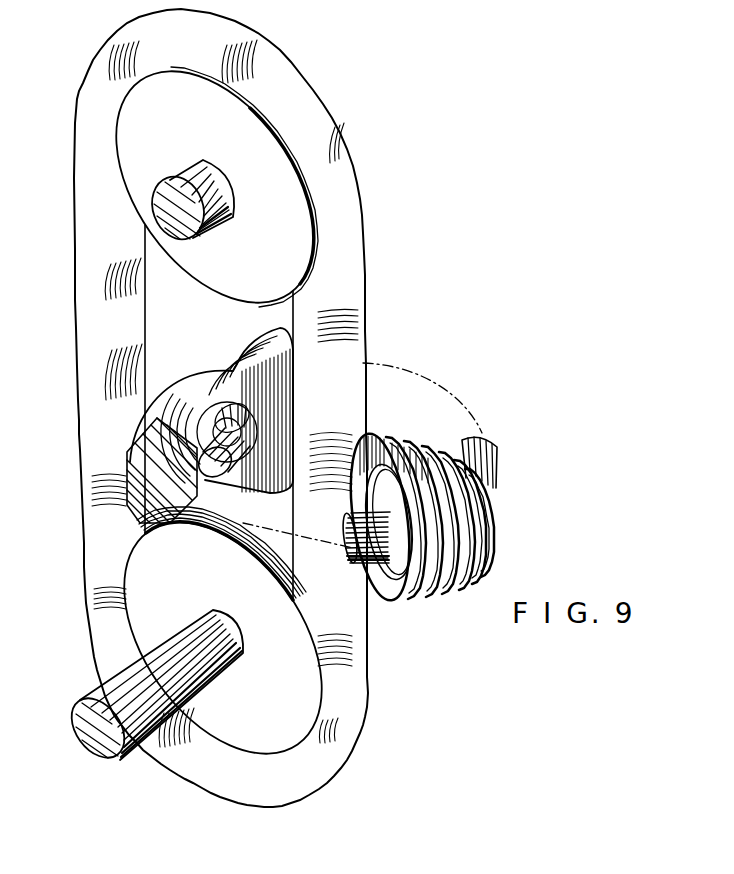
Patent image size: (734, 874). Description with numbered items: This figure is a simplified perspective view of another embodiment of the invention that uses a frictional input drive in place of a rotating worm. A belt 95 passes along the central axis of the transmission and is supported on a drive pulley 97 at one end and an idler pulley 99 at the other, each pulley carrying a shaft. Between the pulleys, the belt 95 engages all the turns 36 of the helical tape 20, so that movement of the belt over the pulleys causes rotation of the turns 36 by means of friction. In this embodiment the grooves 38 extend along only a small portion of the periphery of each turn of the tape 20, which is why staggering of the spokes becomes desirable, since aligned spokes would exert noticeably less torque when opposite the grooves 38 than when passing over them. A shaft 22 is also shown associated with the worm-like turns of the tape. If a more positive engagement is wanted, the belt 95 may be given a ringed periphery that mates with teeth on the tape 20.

The helical tape 20 is at (137, 503).
The worm shaft 22 is at (497, 448).
The turns 36 is at (182, 390).
The groove 38 is at (147, 435).
The belt 95 is at (333, 338).
The drive pulley 97 is at (180, 580).
The idler pulley 99 is at (253, 180).